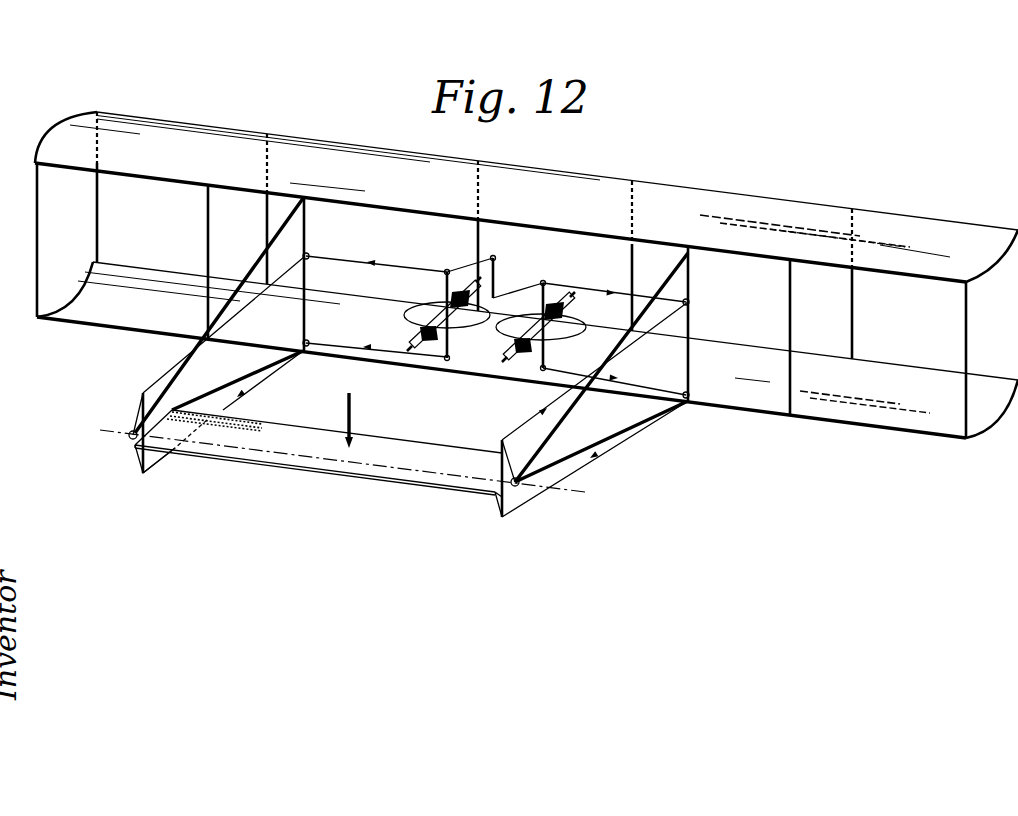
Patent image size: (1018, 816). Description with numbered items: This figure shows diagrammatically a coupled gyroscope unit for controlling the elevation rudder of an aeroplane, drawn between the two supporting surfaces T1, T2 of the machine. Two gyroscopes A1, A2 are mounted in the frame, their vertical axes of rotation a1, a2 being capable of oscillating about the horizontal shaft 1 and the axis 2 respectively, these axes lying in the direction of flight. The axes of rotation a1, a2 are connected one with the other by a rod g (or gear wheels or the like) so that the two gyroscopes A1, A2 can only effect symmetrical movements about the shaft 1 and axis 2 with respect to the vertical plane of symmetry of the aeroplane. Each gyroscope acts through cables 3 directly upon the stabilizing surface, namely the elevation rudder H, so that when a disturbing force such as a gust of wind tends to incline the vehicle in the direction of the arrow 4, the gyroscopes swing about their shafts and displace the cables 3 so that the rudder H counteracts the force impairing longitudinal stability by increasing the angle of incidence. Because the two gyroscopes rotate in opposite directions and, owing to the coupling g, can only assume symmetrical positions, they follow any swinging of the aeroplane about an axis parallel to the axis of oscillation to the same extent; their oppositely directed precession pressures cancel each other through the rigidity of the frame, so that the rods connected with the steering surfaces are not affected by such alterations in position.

The supporting surface T1 is at (818, 196).
The supporting surface T2 is at (123, 318).
The cables 3 is at (383, 262).
The axis 2 is at (474, 286).
The shaft 1 is at (574, 300).
The rod g is at (503, 286).
The axis of rotation a1 is at (550, 278).
The axis of rotation a2 is at (443, 281).
The gyroscope A1 is at (568, 342).
The gyroscope A2 is at (466, 330).
The arrow 4 is at (352, 407).
The elevation rudder H is at (342, 455).